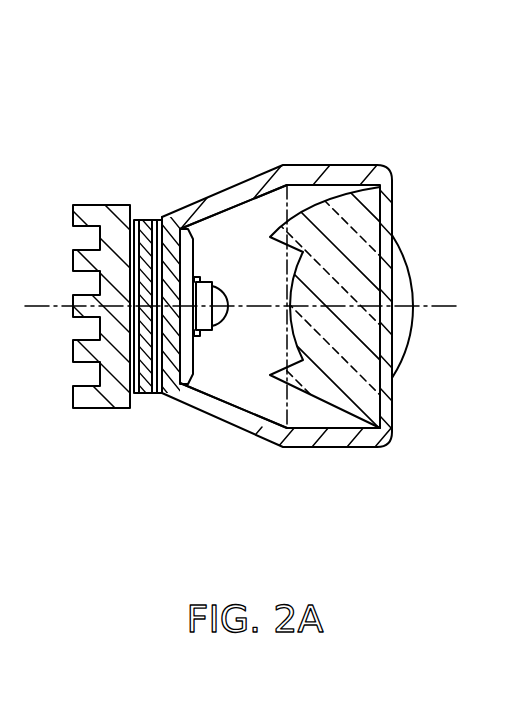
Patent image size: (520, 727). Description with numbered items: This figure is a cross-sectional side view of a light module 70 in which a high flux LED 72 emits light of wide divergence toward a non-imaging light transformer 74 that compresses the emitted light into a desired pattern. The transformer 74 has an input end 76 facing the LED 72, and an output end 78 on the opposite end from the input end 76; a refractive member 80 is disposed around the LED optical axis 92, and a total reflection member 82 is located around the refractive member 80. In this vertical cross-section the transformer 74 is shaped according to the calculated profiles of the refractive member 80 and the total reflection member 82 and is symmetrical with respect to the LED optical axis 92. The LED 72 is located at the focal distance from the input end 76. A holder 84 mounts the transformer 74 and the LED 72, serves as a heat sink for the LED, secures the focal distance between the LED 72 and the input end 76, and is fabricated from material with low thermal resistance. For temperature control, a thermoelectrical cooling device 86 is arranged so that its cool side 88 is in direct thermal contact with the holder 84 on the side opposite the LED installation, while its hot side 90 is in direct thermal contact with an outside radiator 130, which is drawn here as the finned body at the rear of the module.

The light module 70 is at (452, 109).
The high flux LED 72 is at (231, 292).
The non-imaging light transformer 74 is at (372, 214).
The input end 76 is at (272, 328).
The output end 78 is at (392, 416).
The refractive member 80 is at (410, 332).
The total reflection member 82 is at (321, 396).
The holder 84 is at (352, 165).
The thermoelectrical cooling device 86 is at (150, 220).
The cool side 88 is at (167, 220).
The hot side 90 is at (142, 220).
The LED optical axis 92 is at (259, 309).
The outside radiator 130 is at (73, 205).